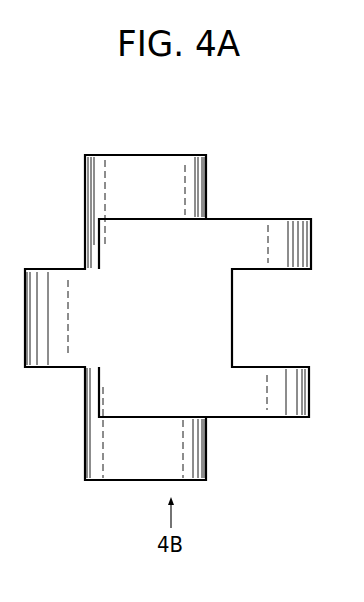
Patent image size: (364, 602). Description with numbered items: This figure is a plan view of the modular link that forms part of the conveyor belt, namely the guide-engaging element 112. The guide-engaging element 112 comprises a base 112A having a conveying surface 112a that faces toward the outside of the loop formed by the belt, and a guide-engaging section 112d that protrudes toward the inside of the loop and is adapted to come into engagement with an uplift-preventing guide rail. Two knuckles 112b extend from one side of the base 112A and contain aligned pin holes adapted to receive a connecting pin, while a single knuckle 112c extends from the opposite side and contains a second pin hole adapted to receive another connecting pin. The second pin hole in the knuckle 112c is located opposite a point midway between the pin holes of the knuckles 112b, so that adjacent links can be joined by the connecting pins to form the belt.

The guide-engaging element 112 is at (72, 135).
The base 112A is at (217, 237).
The conveying surface 112a is at (192, 365).
The knuckles 112b is at (253, 258).
The knuckle 112c is at (56, 283).
The guide-engaging section 112d is at (150, 168).